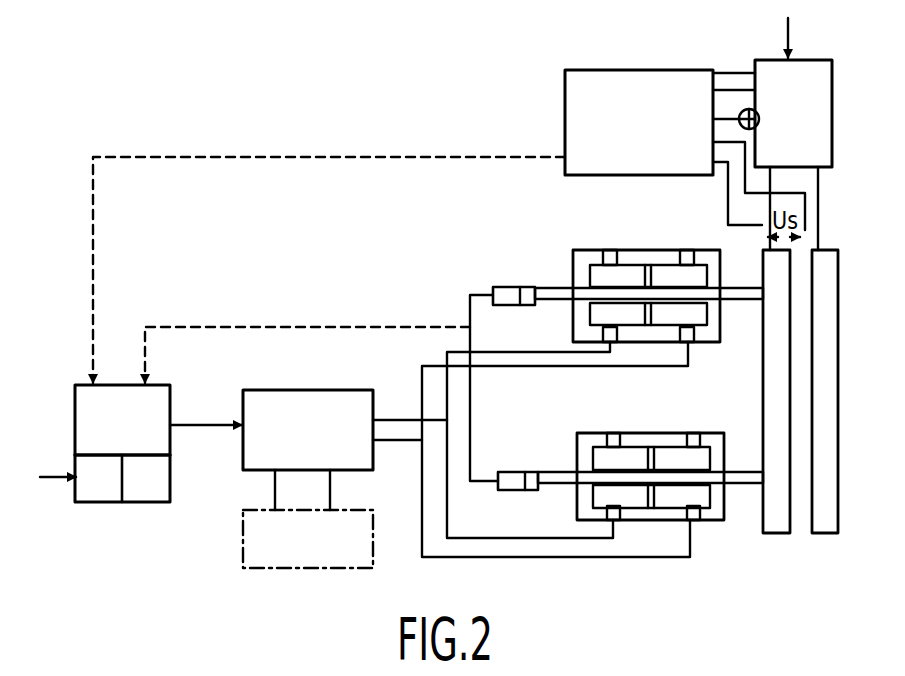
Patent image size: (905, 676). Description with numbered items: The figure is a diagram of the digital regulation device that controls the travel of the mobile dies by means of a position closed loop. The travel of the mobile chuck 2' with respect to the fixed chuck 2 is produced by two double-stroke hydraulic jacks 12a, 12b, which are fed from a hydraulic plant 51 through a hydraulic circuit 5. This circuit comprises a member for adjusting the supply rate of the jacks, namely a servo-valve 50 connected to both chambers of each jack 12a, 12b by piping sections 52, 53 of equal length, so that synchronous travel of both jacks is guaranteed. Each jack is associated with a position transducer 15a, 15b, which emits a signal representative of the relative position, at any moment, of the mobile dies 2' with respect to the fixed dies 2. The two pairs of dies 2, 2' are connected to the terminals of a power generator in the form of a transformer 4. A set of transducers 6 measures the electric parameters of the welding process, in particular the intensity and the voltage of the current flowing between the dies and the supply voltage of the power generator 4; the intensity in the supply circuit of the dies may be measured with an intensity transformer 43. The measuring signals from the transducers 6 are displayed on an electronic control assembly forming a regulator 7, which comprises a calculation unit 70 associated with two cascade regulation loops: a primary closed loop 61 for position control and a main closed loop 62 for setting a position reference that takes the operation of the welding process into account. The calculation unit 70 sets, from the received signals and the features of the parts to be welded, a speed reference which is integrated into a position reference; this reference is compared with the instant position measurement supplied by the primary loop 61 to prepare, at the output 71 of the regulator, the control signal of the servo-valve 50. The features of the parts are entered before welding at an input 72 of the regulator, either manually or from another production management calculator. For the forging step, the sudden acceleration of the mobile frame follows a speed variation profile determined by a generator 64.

The fixed chuck 2 is at (823, 435).
The mobile chuck 2' is at (770, 435).
The transformer 4 is at (832, 95).
The hydraulic circuit 5 is at (238, 484).
The set of transducers 6 is at (565, 120).
The regulator 7 is at (70, 380).
The double-stroke hydraulic jack 12a is at (731, 332).
The double-stroke hydraulic jack 12b is at (714, 522).
The position transducer 15a is at (516, 287).
The position transducer 15b is at (513, 472).
The intensity transformer 43 is at (744, 110).
The servo-valve 50 is at (313, 390).
The hydraulic plant 51 is at (286, 568).
The piping section 52 is at (604, 356).
The piping section 53 is at (544, 367).
The primary closed loop 61 is at (310, 327).
The main closed loop 62 is at (382, 157).
The generator 64 is at (140, 490).
The calculation unit 70 is at (75, 424).
The output of the regulator 71 is at (172, 422).
The input of the regulator 72 is at (40, 477).